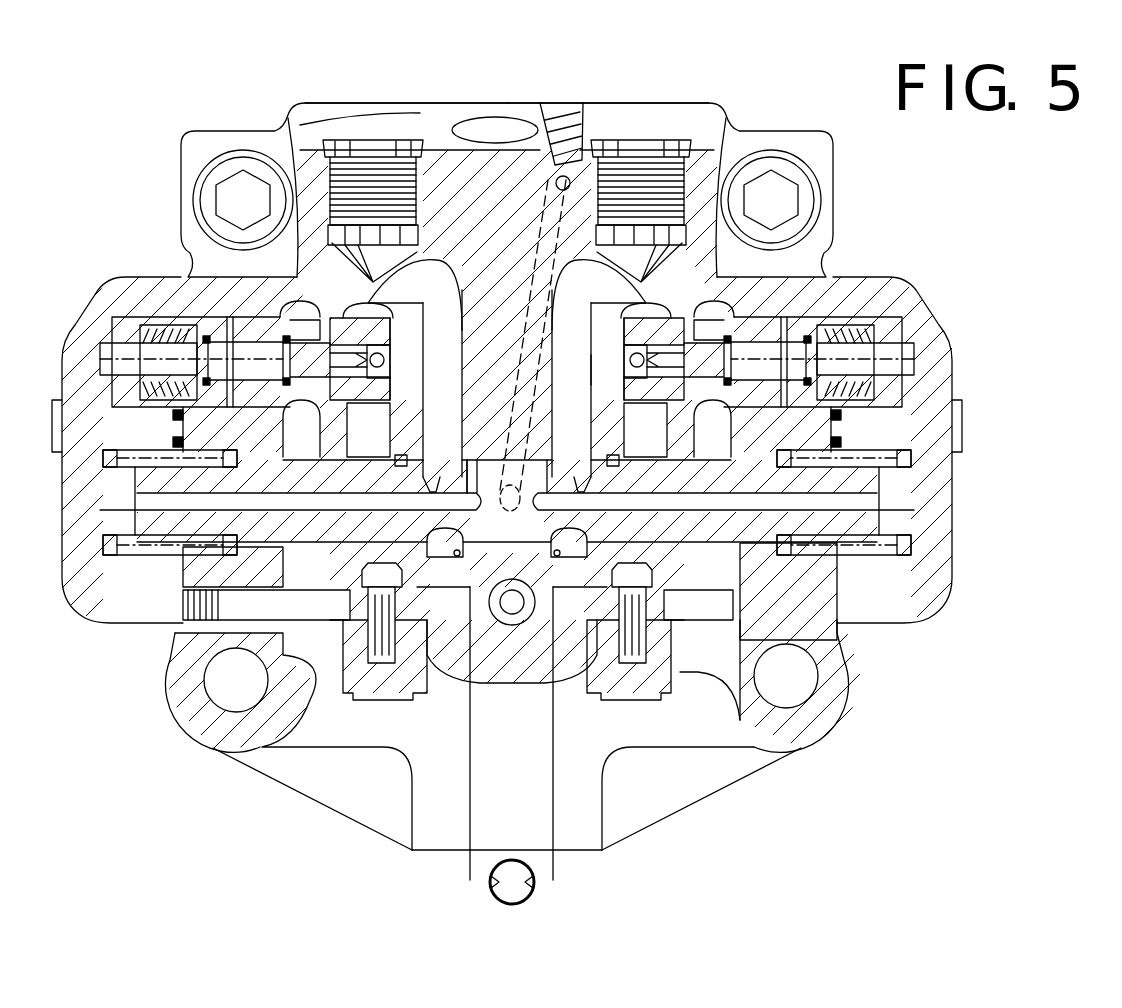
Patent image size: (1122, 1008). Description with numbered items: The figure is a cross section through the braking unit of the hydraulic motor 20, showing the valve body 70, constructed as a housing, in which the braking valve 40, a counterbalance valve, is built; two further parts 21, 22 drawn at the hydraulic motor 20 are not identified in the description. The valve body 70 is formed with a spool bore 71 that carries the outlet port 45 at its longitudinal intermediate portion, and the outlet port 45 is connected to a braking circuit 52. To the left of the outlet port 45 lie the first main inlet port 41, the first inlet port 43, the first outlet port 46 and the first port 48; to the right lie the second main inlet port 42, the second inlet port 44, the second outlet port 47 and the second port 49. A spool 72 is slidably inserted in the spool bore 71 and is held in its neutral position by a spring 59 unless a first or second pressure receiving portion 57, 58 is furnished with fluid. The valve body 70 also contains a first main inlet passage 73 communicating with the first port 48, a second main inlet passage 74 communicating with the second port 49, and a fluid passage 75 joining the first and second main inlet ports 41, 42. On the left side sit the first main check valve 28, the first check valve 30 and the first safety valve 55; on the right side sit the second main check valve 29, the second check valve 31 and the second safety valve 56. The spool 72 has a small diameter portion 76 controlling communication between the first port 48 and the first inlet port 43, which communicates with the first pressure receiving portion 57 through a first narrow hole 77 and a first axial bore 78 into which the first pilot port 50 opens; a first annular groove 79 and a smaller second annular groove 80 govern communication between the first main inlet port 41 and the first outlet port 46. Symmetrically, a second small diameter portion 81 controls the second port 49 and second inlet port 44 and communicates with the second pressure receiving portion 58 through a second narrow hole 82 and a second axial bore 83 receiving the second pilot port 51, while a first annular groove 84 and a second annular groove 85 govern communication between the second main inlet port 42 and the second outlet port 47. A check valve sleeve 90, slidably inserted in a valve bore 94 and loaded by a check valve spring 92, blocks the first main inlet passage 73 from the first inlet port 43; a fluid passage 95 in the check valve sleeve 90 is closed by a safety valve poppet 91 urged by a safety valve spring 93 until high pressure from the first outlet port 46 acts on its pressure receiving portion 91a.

The hydraulic motor 20 is at (512, 860).
The shaft keyway 21 is at (490, 881).
The shaft keyway 22 is at (534, 881).
The first main check valve 28 is at (325, 305).
The second main check valve 29 is at (682, 308).
The first check valve 30 is at (413, 638).
The second check valve 31 is at (610, 634).
The braking valve 40 is at (780, 550).
The first main inlet port 41 is at (283, 568).
The second main inlet port 42 is at (745, 565).
The first inlet port 43 is at (338, 460).
The second inlet port 44 is at (655, 458).
The outlet port 45 is at (512, 617).
The first outlet port 46 is at (262, 456).
The second outlet port 47 is at (748, 455).
The first port 48 is at (462, 548).
The second port 49 is at (565, 556).
The first pilot port 50 is at (482, 458).
The second pilot port 51 is at (515, 447).
The braking circuit 52 is at (547, 220).
The first safety valve 55 is at (258, 317).
The second safety valve 56 is at (768, 317).
The first pressure receiving portion 57 is at (128, 555).
The second pressure receiving portion 58 is at (877, 596).
The spring 59 is at (100, 560).
The valve body 70 is at (848, 658).
The spool bore 71 is at (507, 375).
The spool 72 is at (185, 600).
The first main inlet passage 73 is at (428, 258).
The second main inlet passage 74 is at (556, 300).
The fluid passage 75 is at (483, 617).
The small diameter portion 76 is at (438, 488).
The first narrow hole 77 is at (400, 458).
The first axial bore 78 is at (150, 510).
The first annular groove 79 is at (277, 497).
The second annular groove 80 is at (387, 505).
The second small diameter portion 81 is at (532, 313).
The second narrow hole 82 is at (600, 462).
The second axial bore 83 is at (888, 510).
The first annular groove 84 is at (760, 497).
The second annular groove 85 is at (640, 505).
The check valve sleeve 90 is at (435, 262).
The safety valve poppet 91 is at (305, 340).
The pressure receiving portion 91a is at (507, 430).
The check valve spring 92 is at (86, 318).
The safety valve spring 93 is at (190, 318).
The valve bore 94 is at (228, 325).
The fluid passage 95 is at (591, 360).